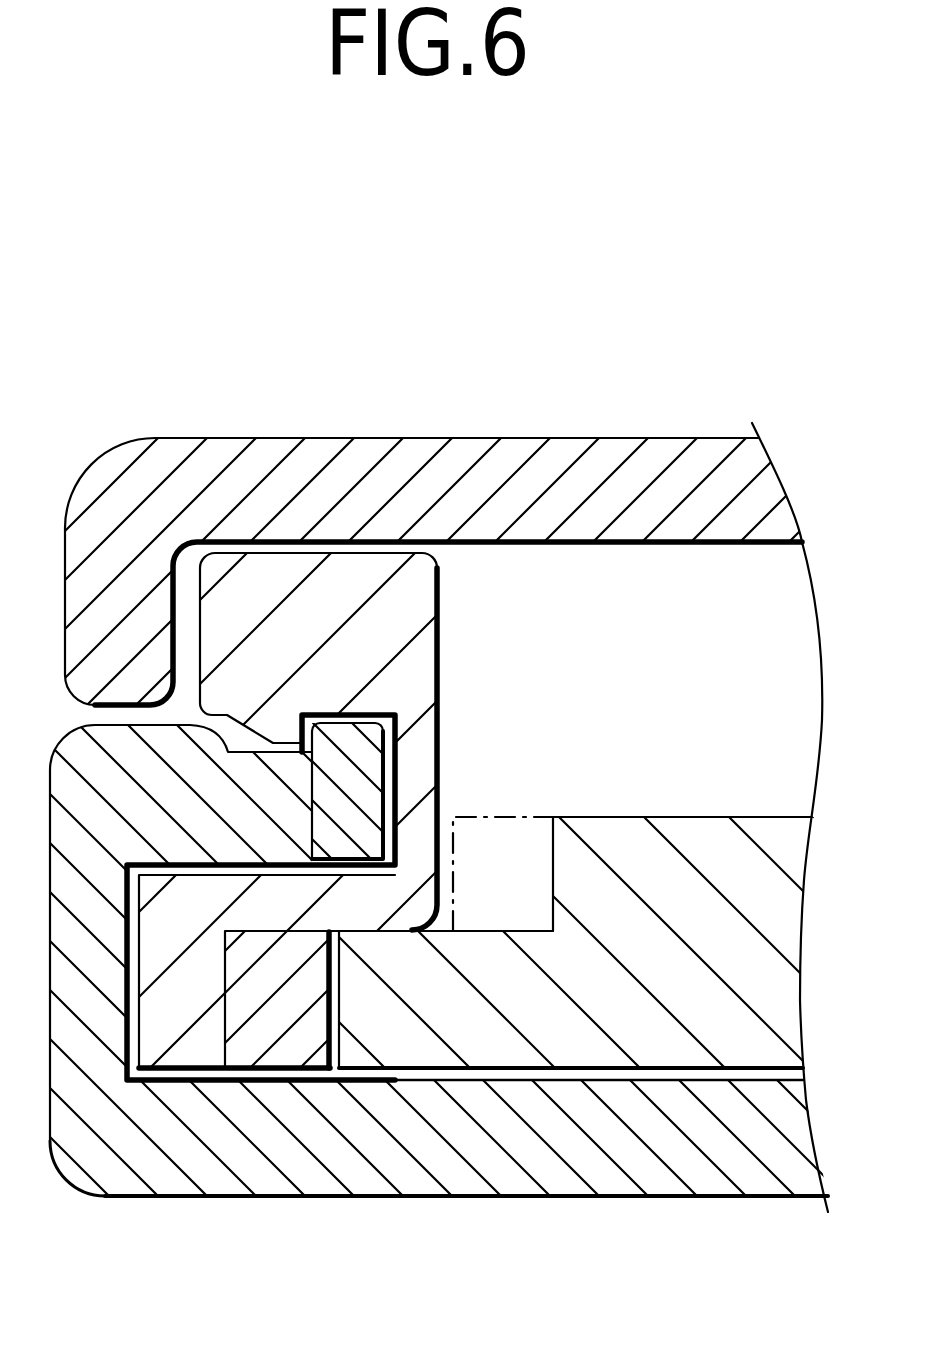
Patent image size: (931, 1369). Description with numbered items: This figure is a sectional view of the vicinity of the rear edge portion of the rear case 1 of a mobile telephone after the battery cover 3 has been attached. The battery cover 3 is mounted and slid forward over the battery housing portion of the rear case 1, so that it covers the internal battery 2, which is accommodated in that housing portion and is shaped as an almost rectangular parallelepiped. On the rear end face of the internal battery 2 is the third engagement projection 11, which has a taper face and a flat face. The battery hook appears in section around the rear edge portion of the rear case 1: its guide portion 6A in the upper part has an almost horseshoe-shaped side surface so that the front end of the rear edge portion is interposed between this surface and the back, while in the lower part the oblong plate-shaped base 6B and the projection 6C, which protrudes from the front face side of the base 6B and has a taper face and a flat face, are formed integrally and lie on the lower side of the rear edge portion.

The rear case 1 is at (622, 1137).
The internal battery 2 is at (703, 848).
The battery cover 3 is at (405, 473).
The guide portion 6A is at (410, 625).
The base 6B is at (172, 1018).
The projection 6C is at (272, 1032).
The third engagement projection 11 is at (487, 965).